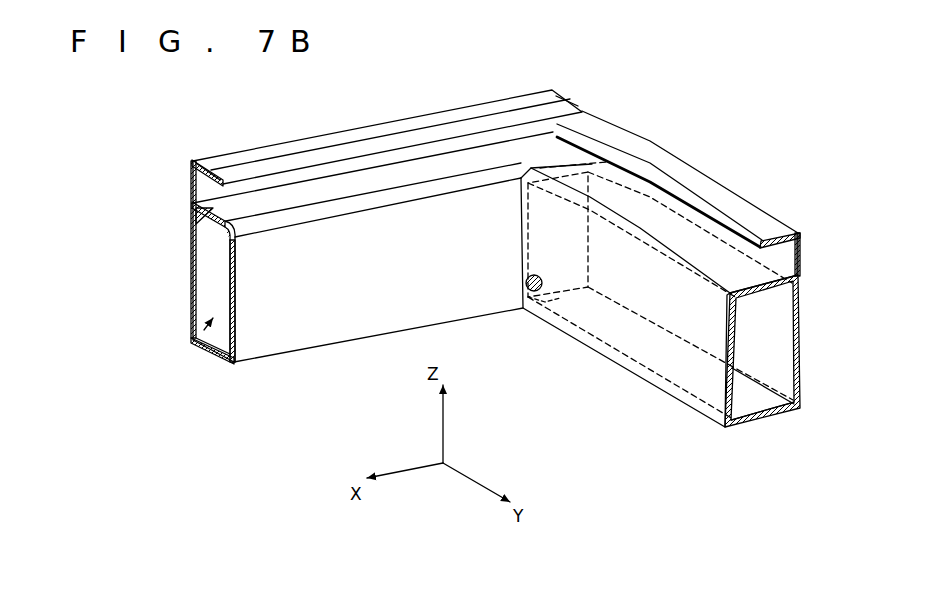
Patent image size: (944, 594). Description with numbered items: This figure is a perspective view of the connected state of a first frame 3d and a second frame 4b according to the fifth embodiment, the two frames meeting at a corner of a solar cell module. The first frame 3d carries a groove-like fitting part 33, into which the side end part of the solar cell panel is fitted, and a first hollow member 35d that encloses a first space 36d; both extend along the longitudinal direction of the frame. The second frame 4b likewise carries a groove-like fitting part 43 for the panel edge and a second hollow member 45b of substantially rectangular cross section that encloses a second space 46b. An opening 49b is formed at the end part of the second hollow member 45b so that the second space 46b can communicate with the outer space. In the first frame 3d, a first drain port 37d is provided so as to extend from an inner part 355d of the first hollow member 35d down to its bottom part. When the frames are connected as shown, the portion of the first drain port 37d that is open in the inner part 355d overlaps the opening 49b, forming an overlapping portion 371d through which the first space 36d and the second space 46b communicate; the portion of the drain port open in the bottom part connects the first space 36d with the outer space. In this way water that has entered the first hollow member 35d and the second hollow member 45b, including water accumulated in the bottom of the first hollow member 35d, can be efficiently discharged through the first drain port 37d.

The first frame 3d is at (415, 118).
The fitting part 33 is at (257, 170).
The first hollow member 35d is at (312, 335).
The inner part 355d is at (230, 284).
The first space 36d is at (206, 350).
The first drain port 37d is at (526, 318).
The overlapping portion 371d is at (560, 310).
The second frame 4b is at (683, 160).
The fitting part 43 is at (798, 233).
The second hollow member 45b is at (688, 378).
The second space 46b is at (784, 381).
The opening 49b is at (612, 165).